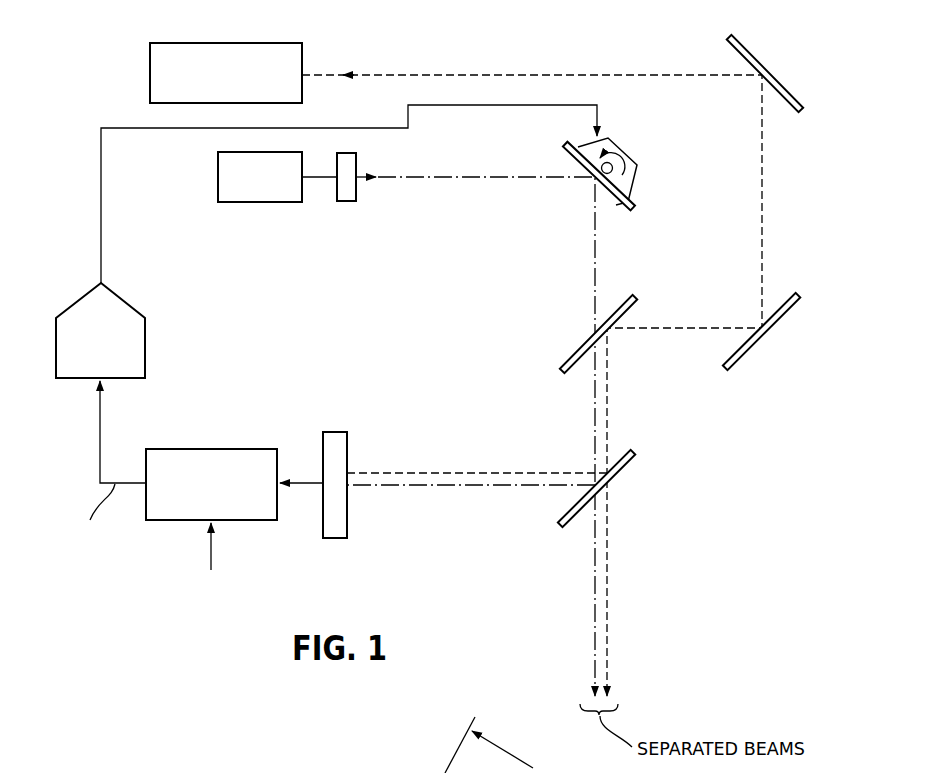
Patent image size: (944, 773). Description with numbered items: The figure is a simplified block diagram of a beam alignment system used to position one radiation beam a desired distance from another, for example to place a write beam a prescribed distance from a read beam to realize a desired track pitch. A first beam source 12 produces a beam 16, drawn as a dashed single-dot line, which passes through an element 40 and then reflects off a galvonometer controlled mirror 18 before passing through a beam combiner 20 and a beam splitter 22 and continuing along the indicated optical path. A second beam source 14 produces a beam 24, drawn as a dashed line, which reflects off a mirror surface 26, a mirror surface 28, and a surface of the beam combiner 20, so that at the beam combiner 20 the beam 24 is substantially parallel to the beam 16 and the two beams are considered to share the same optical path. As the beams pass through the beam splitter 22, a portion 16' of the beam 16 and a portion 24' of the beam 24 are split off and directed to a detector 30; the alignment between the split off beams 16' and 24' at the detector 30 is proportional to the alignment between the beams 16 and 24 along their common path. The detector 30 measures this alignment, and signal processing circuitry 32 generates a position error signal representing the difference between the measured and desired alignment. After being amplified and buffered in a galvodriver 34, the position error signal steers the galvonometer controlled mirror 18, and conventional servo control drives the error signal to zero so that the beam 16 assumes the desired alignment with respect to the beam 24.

The first beam source 12 is at (268, 203).
The second beam source 14 is at (262, 43).
The beam 16 is at (448, 436).
The split off beam portion 16' is at (471, 516).
The galvonometer controlled mirror 18 is at (618, 208).
The beam combiner 20 is at (562, 360).
The beam splitter 22 is at (558, 520).
The beam 24 is at (532, 357).
The split off beam portion 24' is at (477, 443).
The mirror surface 26 is at (790, 110).
The mirror surface 28 is at (724, 358).
The detector 30 is at (335, 432).
The signal processing circuitry 32 is at (215, 449).
The galvodriver 34 is at (146, 348).
The modulator 40 is at (347, 202).